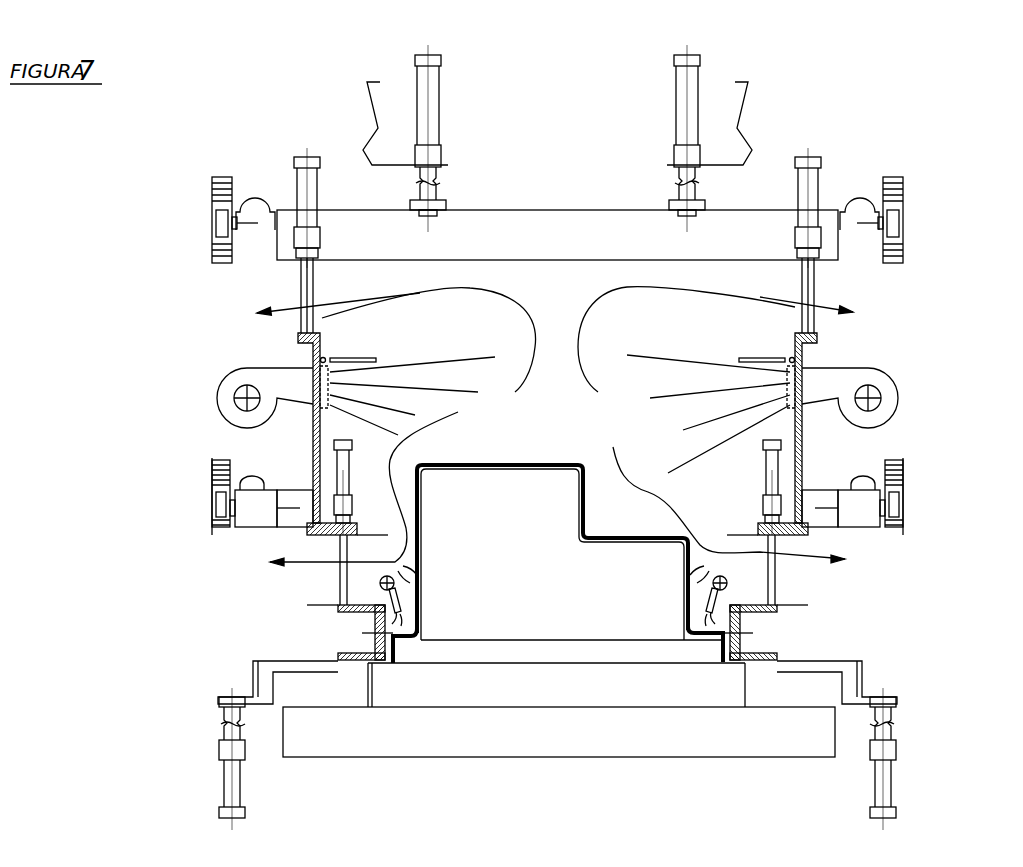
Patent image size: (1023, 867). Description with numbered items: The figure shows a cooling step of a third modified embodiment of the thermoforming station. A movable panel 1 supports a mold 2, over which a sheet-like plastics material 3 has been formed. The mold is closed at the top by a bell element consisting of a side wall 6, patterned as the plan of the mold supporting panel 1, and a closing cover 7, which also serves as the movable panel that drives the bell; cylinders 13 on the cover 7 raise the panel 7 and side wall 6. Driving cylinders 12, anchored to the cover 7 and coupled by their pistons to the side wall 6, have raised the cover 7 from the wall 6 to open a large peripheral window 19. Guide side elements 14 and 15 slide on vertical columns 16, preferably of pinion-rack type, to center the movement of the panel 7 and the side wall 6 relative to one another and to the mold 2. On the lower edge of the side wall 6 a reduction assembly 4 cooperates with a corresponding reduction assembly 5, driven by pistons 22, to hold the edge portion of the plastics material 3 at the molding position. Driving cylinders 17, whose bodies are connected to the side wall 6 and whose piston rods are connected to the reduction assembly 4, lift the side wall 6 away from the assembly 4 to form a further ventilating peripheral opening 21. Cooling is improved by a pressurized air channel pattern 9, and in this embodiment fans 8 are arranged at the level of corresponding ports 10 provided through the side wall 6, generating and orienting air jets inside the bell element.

The movable panel 1 is at (408, 760).
The mold 2 is at (488, 508).
The sheet-like plastics material 3 is at (556, 462).
The reduction assembly 4 is at (370, 621).
The reduction assembly 5 is at (373, 638).
The side wall 6 is at (803, 437).
The closing cover 7 is at (550, 205).
The fans 8 is at (225, 382).
The pressurized air channel pattern 9 is at (413, 590).
The ports 10 is at (372, 385).
The driving cylinders 12 is at (293, 160).
The cylinders 13 is at (700, 115).
The guide side element 14 is at (218, 220).
The guide side element 15 is at (222, 510).
The vertical columns 16 is at (212, 480).
The driving cylinders 17 is at (330, 468).
The peripheral window 19 is at (295, 288).
The ventilating peripheral opening 21 is at (322, 583).
The pistons 22 is at (219, 775).